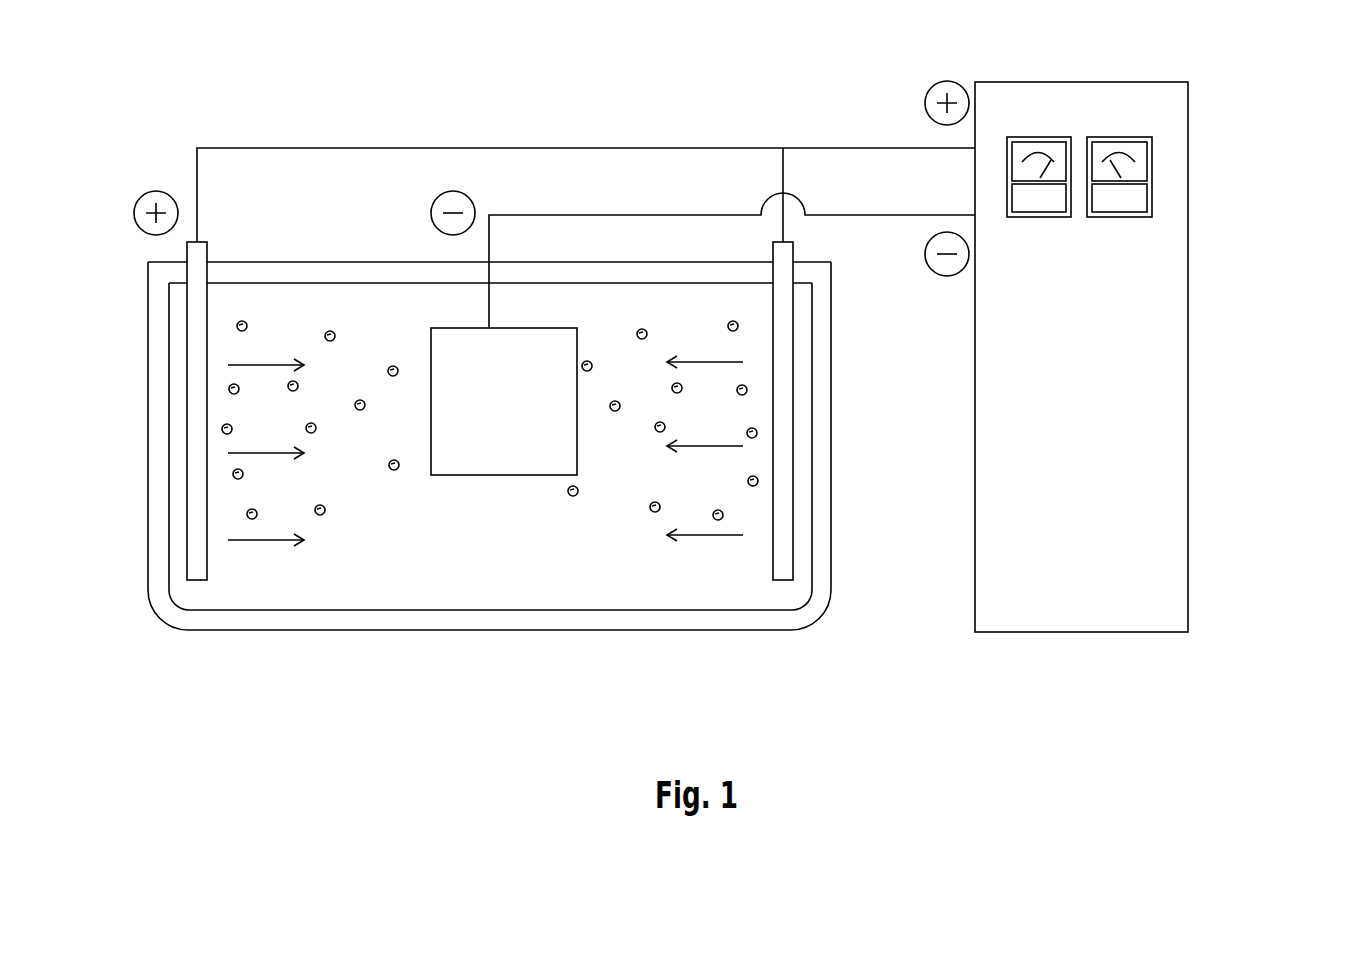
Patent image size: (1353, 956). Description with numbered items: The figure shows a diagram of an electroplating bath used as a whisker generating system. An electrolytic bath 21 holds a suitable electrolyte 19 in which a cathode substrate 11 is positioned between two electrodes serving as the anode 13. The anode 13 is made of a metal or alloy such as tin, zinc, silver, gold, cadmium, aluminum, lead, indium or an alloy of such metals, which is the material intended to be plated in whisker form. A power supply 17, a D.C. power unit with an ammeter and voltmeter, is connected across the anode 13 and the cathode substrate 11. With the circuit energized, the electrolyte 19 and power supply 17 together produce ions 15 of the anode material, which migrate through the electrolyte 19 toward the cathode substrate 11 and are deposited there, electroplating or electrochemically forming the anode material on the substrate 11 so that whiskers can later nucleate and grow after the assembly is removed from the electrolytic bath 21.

The substrate 11 is at (440, 325).
The anode 13 is at (193, 404).
The ions 15 is at (232, 474).
The power supply 17 is at (1205, 482).
The electrolyte 19 is at (447, 577).
The electrolytic bath 21 is at (718, 634).